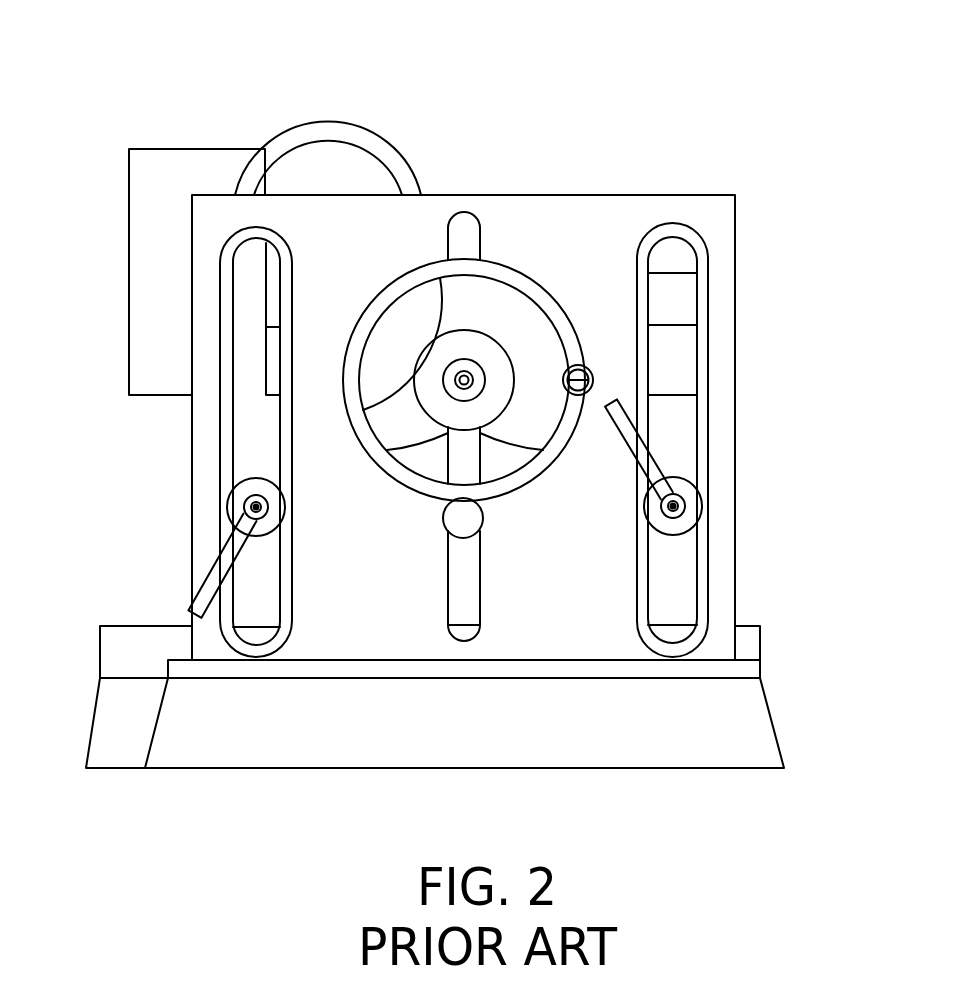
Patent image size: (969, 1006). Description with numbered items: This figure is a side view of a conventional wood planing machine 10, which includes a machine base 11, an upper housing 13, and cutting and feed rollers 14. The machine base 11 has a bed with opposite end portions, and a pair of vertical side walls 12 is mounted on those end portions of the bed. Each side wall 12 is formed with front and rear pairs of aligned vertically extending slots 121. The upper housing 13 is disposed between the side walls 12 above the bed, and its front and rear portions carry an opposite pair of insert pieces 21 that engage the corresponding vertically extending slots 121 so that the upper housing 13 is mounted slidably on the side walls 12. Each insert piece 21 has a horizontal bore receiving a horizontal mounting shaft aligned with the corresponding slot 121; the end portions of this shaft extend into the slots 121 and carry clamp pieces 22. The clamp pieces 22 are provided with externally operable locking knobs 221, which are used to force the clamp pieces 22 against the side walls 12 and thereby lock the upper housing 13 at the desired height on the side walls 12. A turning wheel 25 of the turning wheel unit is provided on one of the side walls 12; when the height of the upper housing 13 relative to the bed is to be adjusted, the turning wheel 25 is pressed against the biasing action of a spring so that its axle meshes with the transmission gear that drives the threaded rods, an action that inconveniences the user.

The wood planing machine 10 is at (615, 196).
The machine base 11 is at (762, 723).
The side wall 12 is at (727, 218).
The vertically extending slot 121 is at (221, 413).
The upper housing 13 is at (680, 390).
The cutting and feed rollers 14 is at (678, 297).
The insert piece 21 is at (243, 457).
The clamp piece 22 is at (232, 509).
The locking knob 221 is at (205, 568).
The turning wheel 25 is at (495, 270).